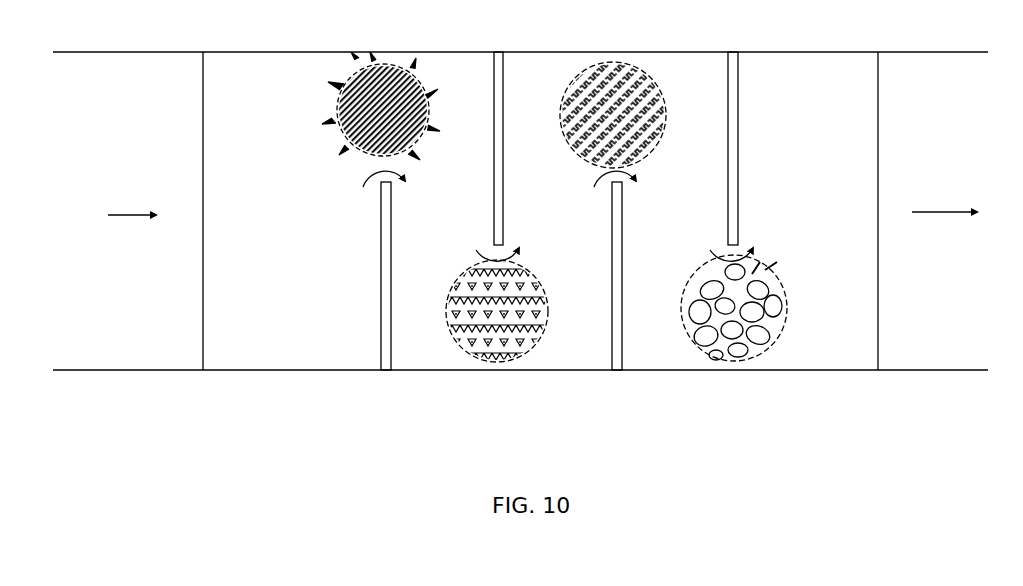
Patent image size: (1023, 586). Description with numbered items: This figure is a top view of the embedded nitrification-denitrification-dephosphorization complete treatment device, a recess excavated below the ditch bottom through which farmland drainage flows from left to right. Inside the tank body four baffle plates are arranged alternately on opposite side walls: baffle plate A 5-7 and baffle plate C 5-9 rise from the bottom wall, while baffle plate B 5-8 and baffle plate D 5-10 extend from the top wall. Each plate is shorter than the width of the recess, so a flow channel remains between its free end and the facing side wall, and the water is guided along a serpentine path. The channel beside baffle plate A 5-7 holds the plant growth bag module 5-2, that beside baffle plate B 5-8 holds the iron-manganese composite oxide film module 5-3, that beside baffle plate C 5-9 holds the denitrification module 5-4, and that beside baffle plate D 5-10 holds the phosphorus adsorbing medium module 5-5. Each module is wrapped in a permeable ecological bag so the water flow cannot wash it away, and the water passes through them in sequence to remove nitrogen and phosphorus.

The plant growth bag module 5-2 is at (398, 106).
The iron-manganese composite oxide film module 5-3 is at (504, 298).
The denitrification module 5-4 is at (629, 115).
The phosphorus adsorbing medium module 5-5 is at (742, 298).
The baffle plate A 5-7 is at (393, 270).
The baffle plate B 5-8 is at (505, 156).
The baffle plate C 5-9 is at (623, 270).
The baffle plate D 5-10 is at (741, 156).